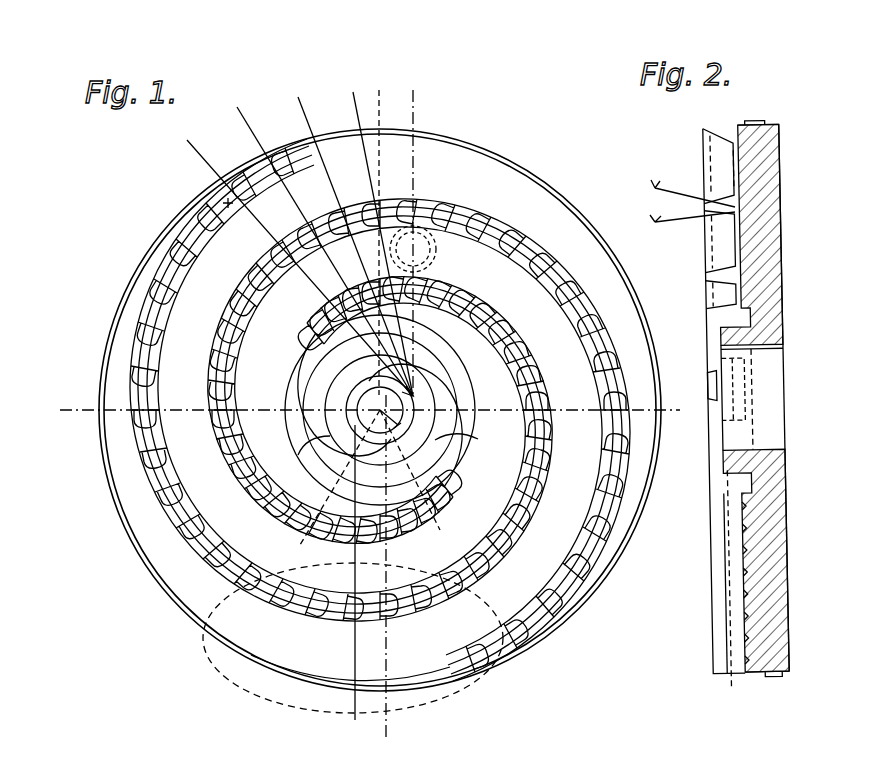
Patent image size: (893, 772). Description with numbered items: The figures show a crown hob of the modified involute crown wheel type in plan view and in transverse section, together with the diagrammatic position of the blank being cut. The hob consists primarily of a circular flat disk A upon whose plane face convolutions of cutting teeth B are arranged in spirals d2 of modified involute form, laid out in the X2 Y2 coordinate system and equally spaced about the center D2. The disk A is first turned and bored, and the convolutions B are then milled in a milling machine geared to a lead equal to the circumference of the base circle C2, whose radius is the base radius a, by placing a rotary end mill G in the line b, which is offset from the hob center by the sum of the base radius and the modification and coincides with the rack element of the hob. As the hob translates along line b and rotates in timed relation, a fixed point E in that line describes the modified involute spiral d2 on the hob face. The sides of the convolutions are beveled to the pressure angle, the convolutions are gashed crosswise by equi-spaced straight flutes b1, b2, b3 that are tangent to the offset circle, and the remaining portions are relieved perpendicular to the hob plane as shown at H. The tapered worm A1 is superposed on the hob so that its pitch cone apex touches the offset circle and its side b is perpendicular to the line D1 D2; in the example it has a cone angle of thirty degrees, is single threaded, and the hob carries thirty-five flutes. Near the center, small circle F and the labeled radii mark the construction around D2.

In FIG. 1, the circular flat disk A is at (534, 188).
In FIG. 2, the circular flat disk A is at (778, 135).
In FIG. 1, the convolutions of cutting teeth B is at (531, 250).
In FIG. 1, the fixed point in line b E is at (420, 232).
In FIG. 1, the rotary end mill G is at (438, 254).
In FIG. 2, the relieved portion H is at (720, 391).
In FIG. 1, the centre circle F is at (380, 410).
In FIG. 1, the center of the hob spirals D2 is at (380, 410).
In FIG. 1, the center of the worm base circle D1 is at (350, 408).
In FIG. 1, the base circle of the hob C2 is at (357, 385).
In FIG. 1, the base radius a is at (406, 420).
In FIG. 1, the modified involute spiral d2 is at (304, 453).
In FIG. 1, the line b is at (433, 108).
In FIG. 1, the flute b1 is at (383, 243).
In FIG. 1, the flute b2 is at (355, 246).
In FIG. 1, the flute b3 is at (325, 251).
In FIG. 1, the X2 coordinate axis X2 is at (376, 578).
In FIG. 1, the Y2 coordinate axis Y2 is at (369, 422).
In FIG. 1, the tapered worm A1 is at (250, 690).